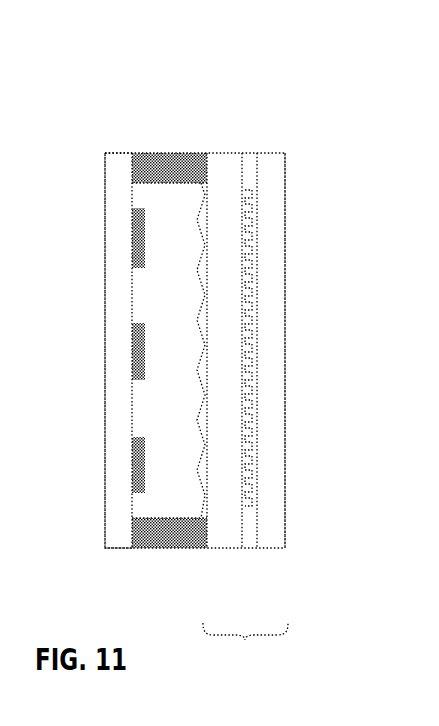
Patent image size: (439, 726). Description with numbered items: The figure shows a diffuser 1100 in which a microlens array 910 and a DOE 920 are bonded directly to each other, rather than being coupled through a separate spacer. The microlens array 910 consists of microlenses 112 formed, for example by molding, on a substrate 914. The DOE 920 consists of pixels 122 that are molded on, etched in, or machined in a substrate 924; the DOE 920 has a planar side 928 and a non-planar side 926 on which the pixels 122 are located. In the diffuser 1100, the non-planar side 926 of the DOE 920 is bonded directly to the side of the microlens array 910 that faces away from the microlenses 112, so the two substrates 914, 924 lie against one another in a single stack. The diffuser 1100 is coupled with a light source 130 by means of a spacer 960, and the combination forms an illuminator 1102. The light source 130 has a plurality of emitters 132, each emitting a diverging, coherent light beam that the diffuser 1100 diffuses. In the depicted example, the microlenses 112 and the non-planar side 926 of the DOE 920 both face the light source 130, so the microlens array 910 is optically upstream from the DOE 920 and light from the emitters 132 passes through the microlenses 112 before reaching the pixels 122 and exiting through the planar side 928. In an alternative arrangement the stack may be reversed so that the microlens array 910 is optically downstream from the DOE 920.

The illuminator 1102 is at (133, 88).
The light source 130 is at (125, 152).
The spacer 960 is at (160, 549).
The emitters 132 is at (142, 350).
The microlenses 112 is at (198, 192).
The substrate 914 is at (222, 549).
The microlens array 910 is at (220, 145).
The non-planar side 926 is at (239, 343).
The pixels 122 is at (246, 215).
The substrate 924 is at (262, 549).
The DOE 920 is at (263, 145).
The planar side 928 is at (289, 340).
The diffuser 1100 is at (245, 648).